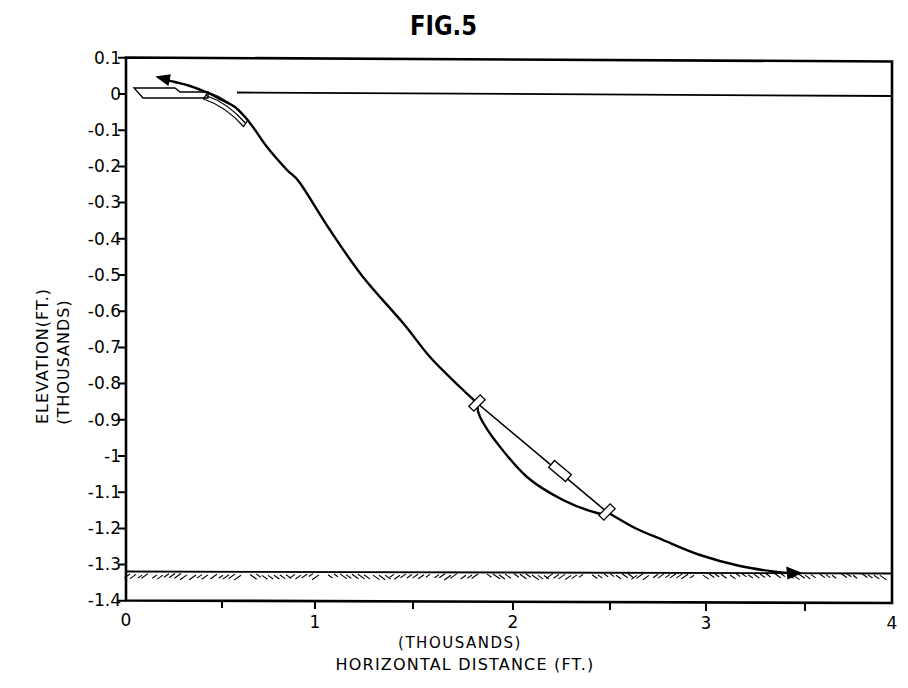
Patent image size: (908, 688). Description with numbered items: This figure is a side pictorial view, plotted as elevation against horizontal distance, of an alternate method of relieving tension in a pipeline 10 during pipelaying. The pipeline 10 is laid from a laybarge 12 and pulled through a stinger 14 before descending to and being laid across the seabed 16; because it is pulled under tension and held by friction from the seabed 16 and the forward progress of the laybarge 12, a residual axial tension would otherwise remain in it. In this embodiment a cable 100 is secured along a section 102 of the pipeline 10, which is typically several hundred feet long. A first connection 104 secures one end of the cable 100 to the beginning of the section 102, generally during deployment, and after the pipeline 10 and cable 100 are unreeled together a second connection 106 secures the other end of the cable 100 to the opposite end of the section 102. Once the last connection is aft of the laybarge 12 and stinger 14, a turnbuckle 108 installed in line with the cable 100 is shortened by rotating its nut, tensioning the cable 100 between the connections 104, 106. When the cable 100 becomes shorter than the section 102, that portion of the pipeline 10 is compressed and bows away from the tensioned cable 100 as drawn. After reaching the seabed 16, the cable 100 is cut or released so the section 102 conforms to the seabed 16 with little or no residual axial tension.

The pipeline 10 is at (436, 349).
The laybarge 12 is at (172, 96).
The stinger 14 is at (236, 120).
The seabed 16 is at (483, 571).
The cable 100 is at (529, 442).
The section 102 is at (527, 477).
The first connection 104 is at (614, 505).
The second connection 106 is at (489, 397).
The turnbuckle 108 is at (572, 466).